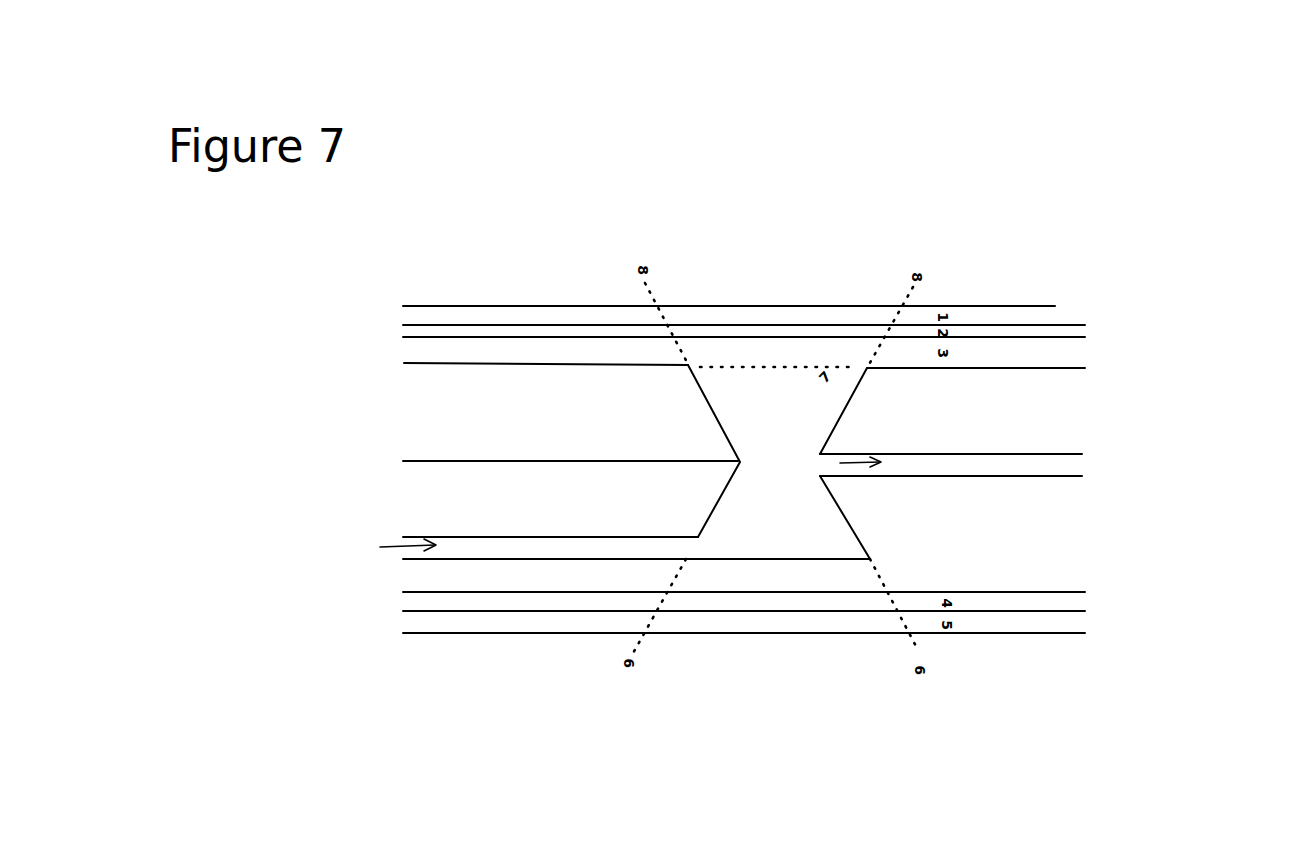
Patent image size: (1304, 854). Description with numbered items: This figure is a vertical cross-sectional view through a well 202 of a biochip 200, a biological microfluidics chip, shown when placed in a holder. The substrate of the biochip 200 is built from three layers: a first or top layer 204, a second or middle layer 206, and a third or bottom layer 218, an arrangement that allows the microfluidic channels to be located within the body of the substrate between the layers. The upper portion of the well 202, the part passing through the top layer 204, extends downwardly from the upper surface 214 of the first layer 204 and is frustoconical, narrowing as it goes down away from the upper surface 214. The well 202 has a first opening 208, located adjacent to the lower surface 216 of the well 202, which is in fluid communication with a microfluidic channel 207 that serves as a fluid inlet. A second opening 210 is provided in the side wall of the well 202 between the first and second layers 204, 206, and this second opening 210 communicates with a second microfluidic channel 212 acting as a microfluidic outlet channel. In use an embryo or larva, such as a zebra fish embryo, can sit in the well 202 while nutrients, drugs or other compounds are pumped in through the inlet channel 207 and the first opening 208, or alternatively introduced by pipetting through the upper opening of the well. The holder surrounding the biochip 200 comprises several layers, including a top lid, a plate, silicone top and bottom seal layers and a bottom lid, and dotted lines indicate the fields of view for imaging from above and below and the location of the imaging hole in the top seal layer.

The biochip 200 is at (940, 241).
The well 202 is at (745, 346).
The first/top layer 204 is at (447, 402).
The second/middle layer 206 is at (433, 492).
The microfluidic channel 207 is at (418, 557).
The first opening 208 is at (663, 551).
The second opening 210 is at (818, 466).
The second microfluidic channel 212 is at (958, 468).
The upper surface 214 is at (995, 368).
The lower surface 216 is at (759, 544).
The third/bottom layer 218 is at (482, 577).